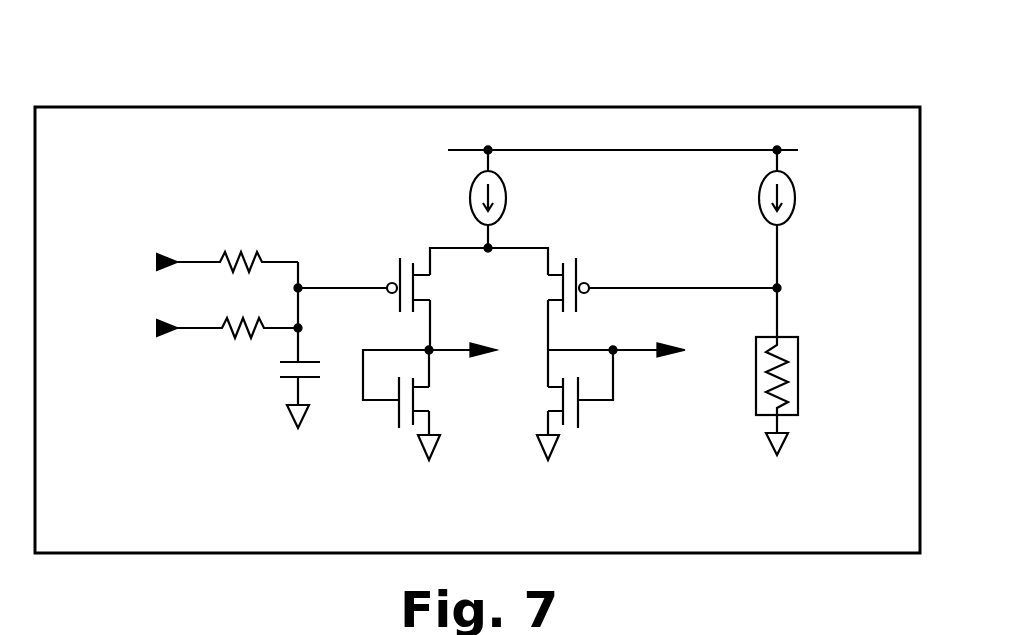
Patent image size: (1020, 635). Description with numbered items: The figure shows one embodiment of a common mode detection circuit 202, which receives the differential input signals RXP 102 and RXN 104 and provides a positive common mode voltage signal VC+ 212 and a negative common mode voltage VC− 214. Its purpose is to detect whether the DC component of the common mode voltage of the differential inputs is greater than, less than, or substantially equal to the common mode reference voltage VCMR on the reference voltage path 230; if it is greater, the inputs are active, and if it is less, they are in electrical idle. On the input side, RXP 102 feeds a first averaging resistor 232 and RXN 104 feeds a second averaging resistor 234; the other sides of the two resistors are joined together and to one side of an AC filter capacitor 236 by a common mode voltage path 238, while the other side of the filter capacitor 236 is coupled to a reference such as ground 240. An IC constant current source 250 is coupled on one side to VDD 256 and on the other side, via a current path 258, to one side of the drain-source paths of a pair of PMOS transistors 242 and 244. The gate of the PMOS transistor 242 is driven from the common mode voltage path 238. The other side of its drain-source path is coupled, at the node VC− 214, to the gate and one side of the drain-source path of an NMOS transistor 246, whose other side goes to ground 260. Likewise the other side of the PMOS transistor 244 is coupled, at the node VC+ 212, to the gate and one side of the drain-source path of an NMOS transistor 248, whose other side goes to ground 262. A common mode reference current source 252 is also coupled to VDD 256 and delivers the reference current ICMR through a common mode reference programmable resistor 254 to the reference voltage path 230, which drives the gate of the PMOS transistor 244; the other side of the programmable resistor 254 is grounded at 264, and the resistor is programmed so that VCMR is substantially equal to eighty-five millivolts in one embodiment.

The common mode detection circuit 202 is at (577, 83).
The VDD 256 is at (448, 150).
The IC constant current source 250 is at (505, 185).
The common mode reference current source 252 is at (795, 182).
The current path 258 is at (445, 252).
The PMOS transistor 242 is at (398, 262).
The PMOS transistor 244 is at (580, 262).
The reference voltage path 230 is at (781, 285).
The common mode reference programmable resistor 254 is at (800, 345).
The reference (ground) 264 is at (777, 448).
The common mode voltage path 238 is at (298, 262).
The first averaging resistor 232 is at (228, 256).
The second averaging resistor 234 is at (228, 336).
The RXP differential input signal 102 is at (172, 258).
The RXN differential input signal 104 is at (172, 336).
The AC filter capacitor 236 is at (285, 378).
The reference (ground) 240 is at (300, 418).
The NMOS transistor 246 is at (395, 428).
The reference (ground) 260 is at (434, 450).
The NMOS transistor 248 is at (582, 428).
The reference (ground) 262 is at (545, 450).
The negative common mode voltage VC− 214 is at (485, 358).
The positive common mode voltage VC+ 212 is at (660, 358).